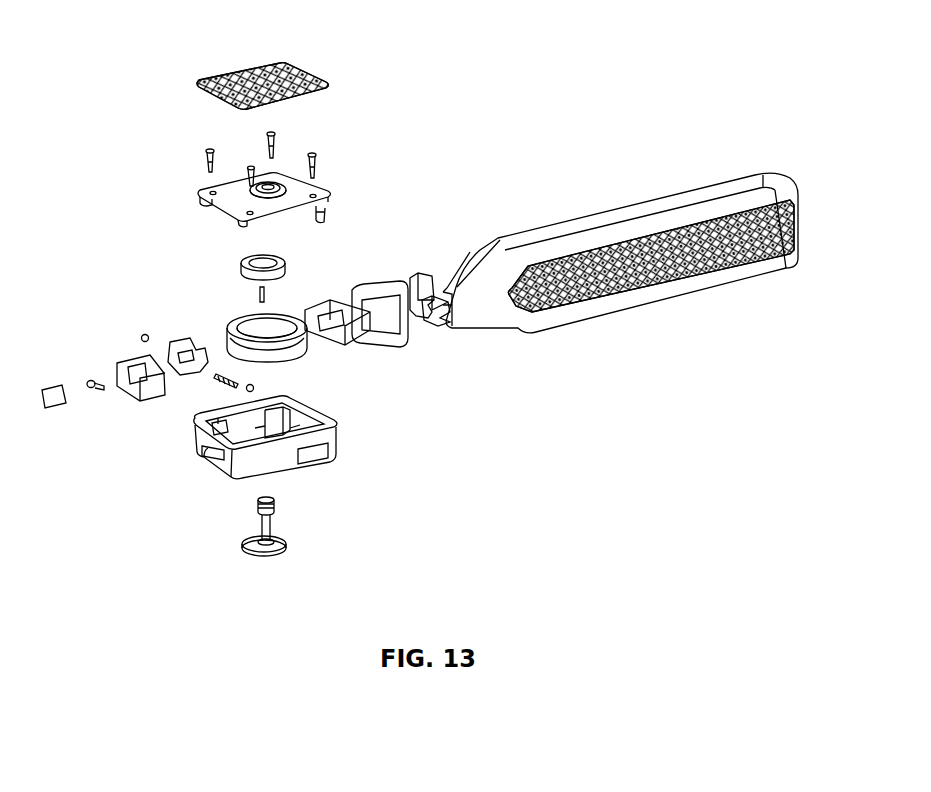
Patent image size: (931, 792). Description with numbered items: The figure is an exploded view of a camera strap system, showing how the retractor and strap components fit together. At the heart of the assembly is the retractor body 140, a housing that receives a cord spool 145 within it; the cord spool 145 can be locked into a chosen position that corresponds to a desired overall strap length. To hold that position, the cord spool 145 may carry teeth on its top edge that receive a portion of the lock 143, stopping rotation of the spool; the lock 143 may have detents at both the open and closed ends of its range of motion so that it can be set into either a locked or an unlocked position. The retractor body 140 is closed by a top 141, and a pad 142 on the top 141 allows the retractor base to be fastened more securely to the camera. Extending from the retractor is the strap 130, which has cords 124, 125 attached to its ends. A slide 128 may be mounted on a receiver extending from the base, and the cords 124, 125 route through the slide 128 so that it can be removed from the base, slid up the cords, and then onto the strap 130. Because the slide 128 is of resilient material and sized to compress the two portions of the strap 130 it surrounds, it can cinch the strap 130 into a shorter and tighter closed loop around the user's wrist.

The cord 124 is at (426, 313).
The cord 125 is at (405, 302).
The slide 128 is at (398, 343).
The strap 130 is at (601, 210).
The retractor body 140 is at (340, 430).
The top 141 is at (331, 193).
The pad 142 is at (228, 72).
The lock 143 is at (122, 364).
The cord spool 145 is at (238, 320).